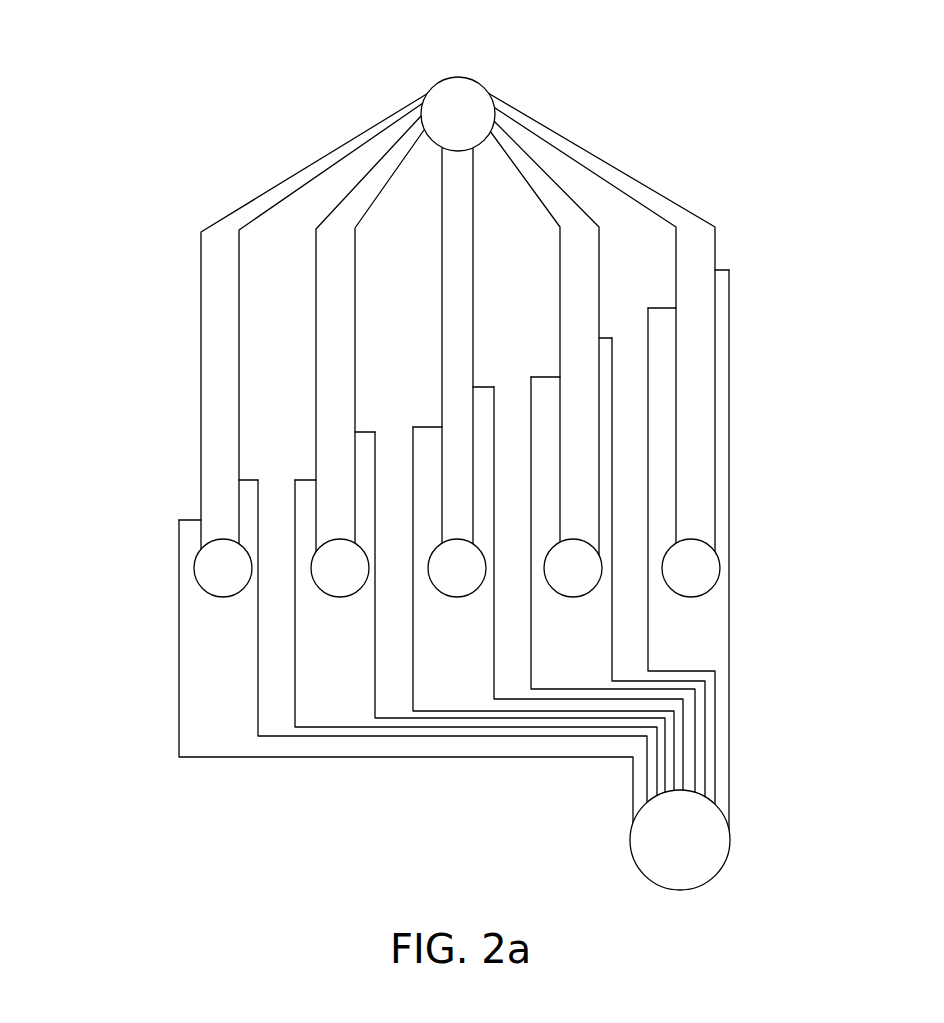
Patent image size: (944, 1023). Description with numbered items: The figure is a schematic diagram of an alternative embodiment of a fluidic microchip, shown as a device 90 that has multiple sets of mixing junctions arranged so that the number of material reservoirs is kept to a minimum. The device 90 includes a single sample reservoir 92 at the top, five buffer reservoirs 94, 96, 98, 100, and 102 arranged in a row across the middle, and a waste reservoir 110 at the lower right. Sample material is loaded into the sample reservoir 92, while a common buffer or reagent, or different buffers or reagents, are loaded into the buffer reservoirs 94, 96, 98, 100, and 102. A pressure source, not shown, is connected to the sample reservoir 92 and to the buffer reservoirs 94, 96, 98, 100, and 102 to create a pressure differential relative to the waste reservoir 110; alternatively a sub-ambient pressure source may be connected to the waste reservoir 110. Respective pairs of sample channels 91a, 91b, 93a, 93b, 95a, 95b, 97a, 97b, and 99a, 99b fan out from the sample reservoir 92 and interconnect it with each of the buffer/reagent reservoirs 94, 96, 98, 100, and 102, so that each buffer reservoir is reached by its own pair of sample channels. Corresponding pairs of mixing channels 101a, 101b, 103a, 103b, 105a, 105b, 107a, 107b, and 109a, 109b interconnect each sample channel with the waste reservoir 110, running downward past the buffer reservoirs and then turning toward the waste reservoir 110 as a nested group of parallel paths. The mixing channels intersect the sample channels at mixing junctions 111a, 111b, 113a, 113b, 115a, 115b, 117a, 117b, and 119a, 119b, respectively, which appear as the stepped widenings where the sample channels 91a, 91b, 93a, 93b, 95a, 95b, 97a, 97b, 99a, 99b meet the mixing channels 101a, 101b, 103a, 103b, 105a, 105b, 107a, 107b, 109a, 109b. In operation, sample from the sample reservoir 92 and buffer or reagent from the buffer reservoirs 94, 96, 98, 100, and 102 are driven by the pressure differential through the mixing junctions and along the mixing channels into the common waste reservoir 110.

The microchip device 90 is at (445, 463).
The sample reservoir 92 is at (472, 78).
The waste reservoir 110 is at (723, 870).
The buffer reservoir 94 is at (197, 585).
The buffer reservoir 96 is at (317, 590).
The buffer reservoir 98 is at (433, 590).
The buffer reservoir 100 is at (550, 588).
The buffer reservoir 102 is at (722, 562).
The sample channel 91a is at (202, 425).
The sample channel 91b is at (241, 310).
The sample channel 93a is at (317, 333).
The sample channel 93b is at (356, 283).
The sample channel 95a is at (442, 301).
The sample channel 95b is at (475, 232).
The sample channel 97a is at (560, 260).
The sample channel 97b is at (566, 192).
The sample channel 99a is at (627, 185).
The sample channel 99b is at (677, 195).
The mixing junction 111a is at (198, 519).
The mixing junction 111b is at (240, 480).
The mixing junction 113a is at (317, 477).
The mixing junction 113b is at (374, 432).
The mixing junction 115a is at (442, 425).
The mixing junction 115b is at (474, 388).
The mixing junction 117a is at (558, 375).
The mixing junction 117b is at (600, 338).
The mixing junction 119a is at (677, 305).
The mixing junction 119b is at (720, 268).
The mixing channel 101a is at (179, 718).
The mixing channel 101b is at (258, 673).
The mixing channel 103a is at (295, 658).
The mixing channel 103b is at (373, 708).
The mixing channel 105a is at (413, 638).
The mixing channel 105b is at (494, 688).
The mixing channel 107a is at (532, 635).
The mixing channel 107b is at (612, 672).
The mixing channel 109a is at (728, 602).
The mixing channel 109b is at (728, 652).